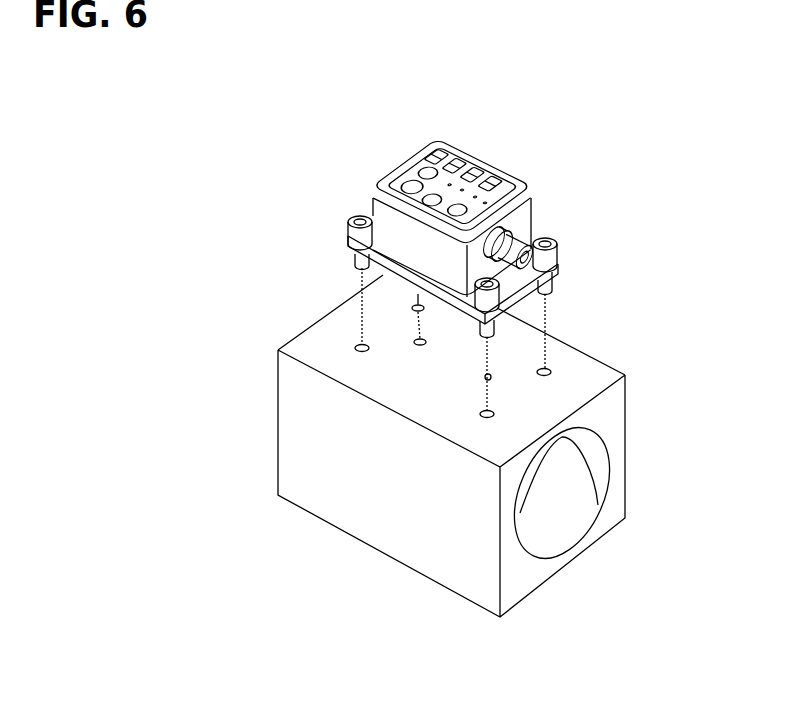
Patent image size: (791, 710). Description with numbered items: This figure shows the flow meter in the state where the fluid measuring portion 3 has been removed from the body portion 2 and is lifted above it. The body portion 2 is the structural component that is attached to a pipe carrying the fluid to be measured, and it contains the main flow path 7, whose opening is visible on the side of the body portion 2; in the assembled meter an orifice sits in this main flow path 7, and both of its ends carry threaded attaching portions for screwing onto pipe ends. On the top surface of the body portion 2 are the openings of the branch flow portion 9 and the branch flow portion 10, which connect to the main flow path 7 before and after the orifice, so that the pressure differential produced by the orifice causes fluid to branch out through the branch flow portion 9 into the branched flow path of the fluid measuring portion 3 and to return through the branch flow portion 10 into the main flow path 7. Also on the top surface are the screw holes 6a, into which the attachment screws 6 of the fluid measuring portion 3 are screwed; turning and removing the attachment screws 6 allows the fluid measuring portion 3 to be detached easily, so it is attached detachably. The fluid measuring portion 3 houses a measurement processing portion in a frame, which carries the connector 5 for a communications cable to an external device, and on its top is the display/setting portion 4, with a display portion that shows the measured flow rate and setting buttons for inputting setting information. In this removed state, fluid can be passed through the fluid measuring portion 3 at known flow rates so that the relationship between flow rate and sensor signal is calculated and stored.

The body portion 2 is at (622, 402).
The fluid measuring portion 3 is at (535, 218).
The display/setting portion 4 is at (431, 138).
The connector 5 is at (537, 230).
The attachment screws 6 is at (350, 222).
The screw holes 6a is at (360, 345).
The main flow path 7 is at (545, 470).
The branch flow portion 9 is at (415, 341).
The branch flow portion 10 is at (489, 373).